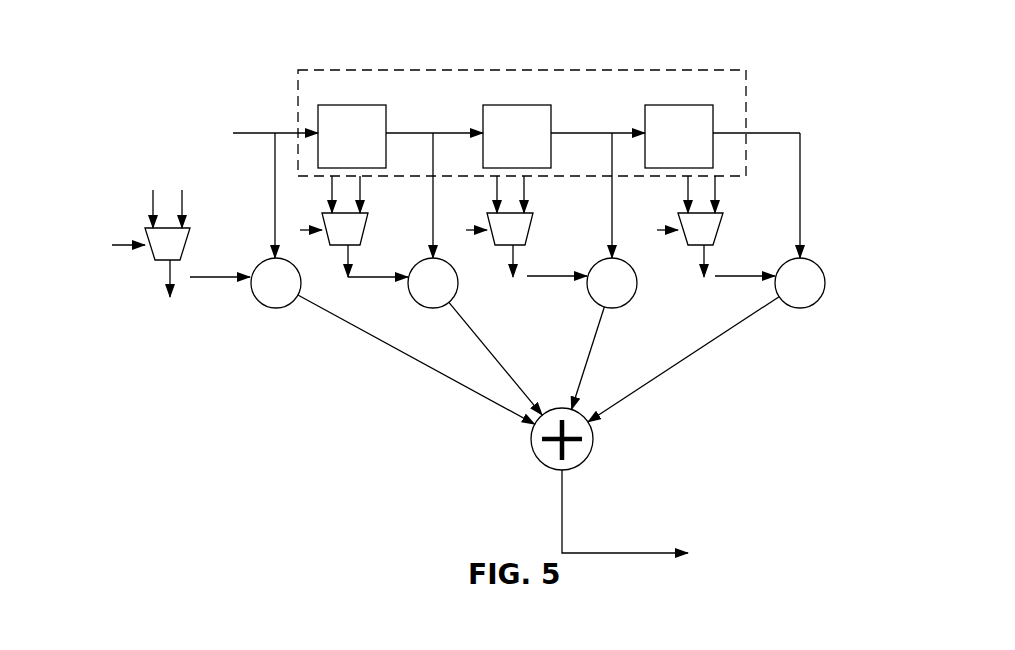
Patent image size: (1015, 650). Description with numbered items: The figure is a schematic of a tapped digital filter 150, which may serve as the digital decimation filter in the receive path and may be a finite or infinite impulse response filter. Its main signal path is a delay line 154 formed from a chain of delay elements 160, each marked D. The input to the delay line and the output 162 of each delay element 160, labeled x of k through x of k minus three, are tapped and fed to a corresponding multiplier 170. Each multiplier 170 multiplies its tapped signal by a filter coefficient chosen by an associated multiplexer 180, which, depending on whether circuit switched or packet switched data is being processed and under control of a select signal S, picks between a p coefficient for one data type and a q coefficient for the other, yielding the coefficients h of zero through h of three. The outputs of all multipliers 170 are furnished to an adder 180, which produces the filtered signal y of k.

The digital filter 150 is at (918, 100).
The delay line 154 is at (665, 69).
The delay element 160 is at (363, 104).
The delay line tap output 162 is at (397, 131).
The multiplier 170 is at (276, 309).
The multiplexer 180 is at (188, 246).